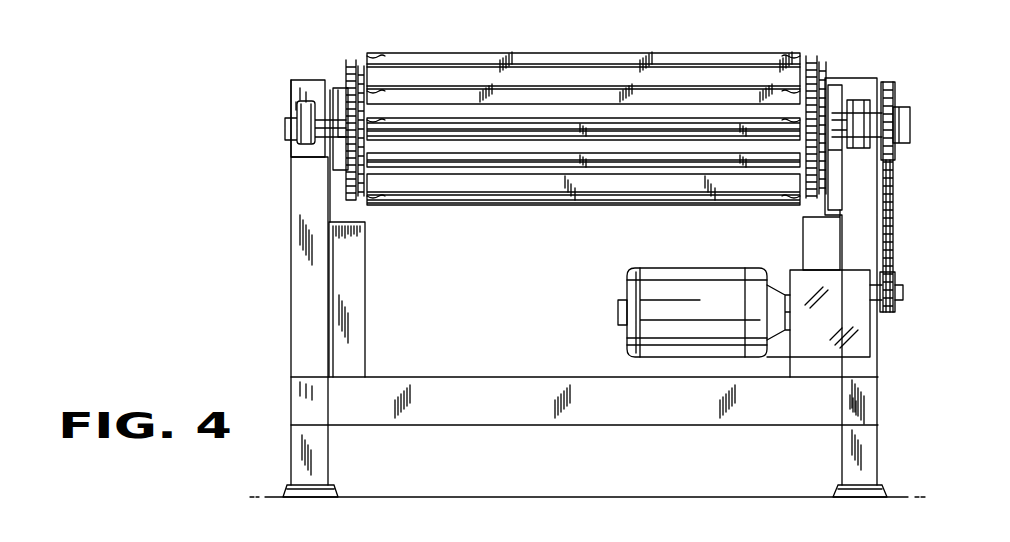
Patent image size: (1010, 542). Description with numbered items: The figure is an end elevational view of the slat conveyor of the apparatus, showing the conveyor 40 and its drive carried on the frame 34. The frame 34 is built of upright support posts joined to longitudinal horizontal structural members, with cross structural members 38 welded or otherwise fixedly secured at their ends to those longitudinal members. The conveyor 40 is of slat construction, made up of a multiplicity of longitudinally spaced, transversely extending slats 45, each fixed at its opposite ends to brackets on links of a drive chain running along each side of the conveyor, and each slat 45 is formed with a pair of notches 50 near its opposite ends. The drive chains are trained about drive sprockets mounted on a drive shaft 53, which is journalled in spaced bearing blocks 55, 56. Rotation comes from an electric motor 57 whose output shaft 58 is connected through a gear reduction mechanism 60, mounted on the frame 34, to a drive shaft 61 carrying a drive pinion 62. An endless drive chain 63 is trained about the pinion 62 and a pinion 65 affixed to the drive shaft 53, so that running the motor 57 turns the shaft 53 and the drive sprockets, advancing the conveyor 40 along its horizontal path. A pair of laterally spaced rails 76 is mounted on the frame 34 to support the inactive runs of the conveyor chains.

The frame 34 is at (885, 400).
The cross structural members 38 is at (490, 405).
The conveyor 40 is at (632, 47).
The slats 45 is at (553, 90).
The notches 50 is at (378, 88).
The drive shaft 53 is at (842, 112).
The bearing block 55 is at (893, 100).
The bearing block 56 is at (300, 115).
The electric motor 57 is at (675, 278).
The output shaft 58 is at (783, 292).
The gear reduction mechanism 60 is at (818, 340).
The drive shaft 61 is at (893, 280).
The drive pinion 62 is at (890, 312).
The endless drive chain 63 is at (893, 208).
The pinion 65 is at (895, 160).
The rails 76 is at (368, 295).